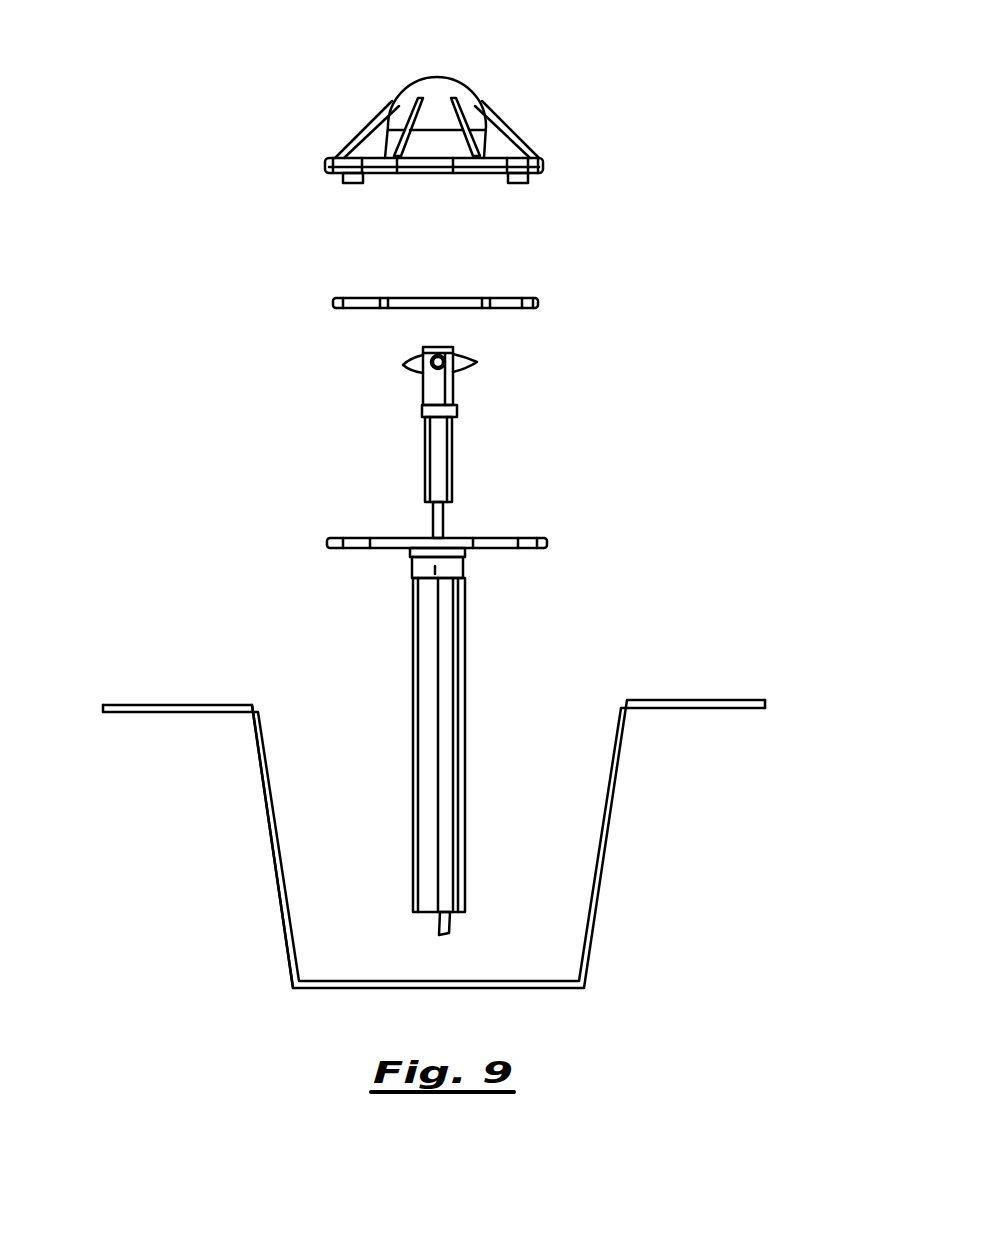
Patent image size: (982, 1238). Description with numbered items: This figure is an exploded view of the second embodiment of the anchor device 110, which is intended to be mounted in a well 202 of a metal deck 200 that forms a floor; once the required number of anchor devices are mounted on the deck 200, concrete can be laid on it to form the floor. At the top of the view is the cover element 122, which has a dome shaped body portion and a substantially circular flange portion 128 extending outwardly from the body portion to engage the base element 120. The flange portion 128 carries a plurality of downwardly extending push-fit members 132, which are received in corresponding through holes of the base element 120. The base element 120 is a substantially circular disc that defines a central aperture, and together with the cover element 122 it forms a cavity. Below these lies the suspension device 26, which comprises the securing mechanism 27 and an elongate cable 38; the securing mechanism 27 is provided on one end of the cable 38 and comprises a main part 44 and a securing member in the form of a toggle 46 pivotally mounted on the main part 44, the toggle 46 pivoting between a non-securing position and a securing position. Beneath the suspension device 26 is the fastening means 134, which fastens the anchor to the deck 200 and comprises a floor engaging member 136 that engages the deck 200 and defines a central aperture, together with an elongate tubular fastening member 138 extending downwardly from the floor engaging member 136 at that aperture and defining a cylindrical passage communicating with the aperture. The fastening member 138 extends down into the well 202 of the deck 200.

The cover element 122 is at (400, 72).
The flange portion 128 is at (513, 152).
The push-fit members 132 is at (527, 182).
The base element 120 is at (355, 285).
The anchor device 110 is at (268, 380).
The toggle 46 is at (463, 357).
The securing mechanism 27 is at (470, 404).
The main part 44 is at (425, 390).
The suspension device 26 is at (470, 466).
The elongate cable 38 is at (445, 520).
The floor engaging member 136 is at (347, 548).
The fastening means 134 is at (476, 654).
The elongate tubular fastening member 138 is at (447, 785).
The metal deck 200 is at (248, 812).
The well 202 is at (263, 768).